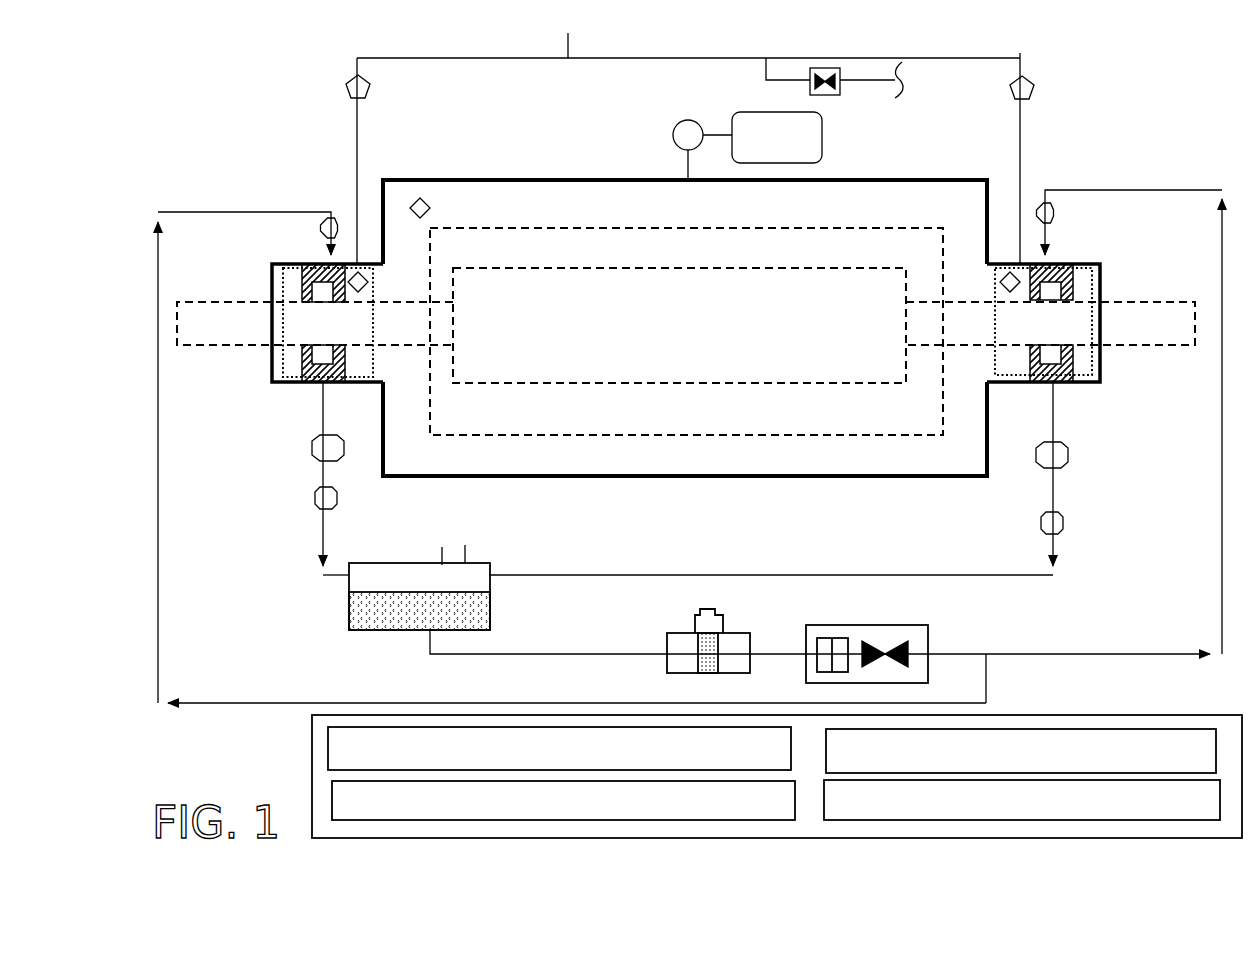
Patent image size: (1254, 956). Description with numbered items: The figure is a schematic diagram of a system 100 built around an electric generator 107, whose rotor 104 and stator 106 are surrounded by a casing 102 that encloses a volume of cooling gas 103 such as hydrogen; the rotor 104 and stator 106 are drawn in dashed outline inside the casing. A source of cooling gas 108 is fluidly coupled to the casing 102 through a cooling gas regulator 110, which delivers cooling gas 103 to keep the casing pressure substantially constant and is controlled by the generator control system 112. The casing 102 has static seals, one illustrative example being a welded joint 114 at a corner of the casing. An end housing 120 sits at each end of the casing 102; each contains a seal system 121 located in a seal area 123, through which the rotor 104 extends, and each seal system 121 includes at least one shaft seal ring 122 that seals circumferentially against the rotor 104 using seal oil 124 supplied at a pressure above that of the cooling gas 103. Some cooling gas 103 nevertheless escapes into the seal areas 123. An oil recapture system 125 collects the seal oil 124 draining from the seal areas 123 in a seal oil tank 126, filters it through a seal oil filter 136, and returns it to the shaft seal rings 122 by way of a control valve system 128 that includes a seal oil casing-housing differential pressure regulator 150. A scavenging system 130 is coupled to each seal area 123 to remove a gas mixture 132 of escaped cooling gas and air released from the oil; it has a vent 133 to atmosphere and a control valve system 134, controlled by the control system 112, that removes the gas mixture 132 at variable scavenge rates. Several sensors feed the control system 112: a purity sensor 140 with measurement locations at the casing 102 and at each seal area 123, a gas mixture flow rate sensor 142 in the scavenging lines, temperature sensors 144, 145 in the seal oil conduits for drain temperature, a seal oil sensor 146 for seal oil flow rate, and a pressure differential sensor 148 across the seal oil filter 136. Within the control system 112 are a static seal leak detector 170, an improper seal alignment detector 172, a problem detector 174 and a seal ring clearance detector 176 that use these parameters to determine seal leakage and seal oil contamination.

The system 100 is at (282, 146).
The casing 102 is at (583, 178).
The cooling gas 103 is at (643, 204).
The rotor 104 is at (493, 295).
The stator 106 is at (544, 248).
The electric generator 107 is at (992, 150).
The source of cooling gas 108 is at (777, 137).
The cooling gas regulator 110 is at (673, 137).
The generator control system 112 is at (312, 772).
The welded joint 114 is at (388, 470).
The end housing 120 is at (272, 358).
The seal system 121 is at (290, 284).
The shaft seal ring 122 is at (298, 265).
The seal area 123 is at (272, 383).
The seal oil 124 is at (182, 213).
The oil recapture system 125 is at (338, 595).
The seal oil tank 126 is at (412, 563).
The control valve system 128 is at (930, 640).
The scavenging system 130 is at (645, 66).
The gas mixture 132 is at (503, 62).
The vent 133 is at (571, 42).
The control valve system 134 is at (833, 93).
The seal oil filter 136 is at (670, 660).
The purity sensor 140 is at (420, 198).
The gas mixture flow rate sensor 142 is at (370, 84).
The temperature sensor 144 is at (318, 500).
The temperature sensor 145 is at (334, 212).
The seal oil sensor 146 is at (322, 450).
The pressure differential sensor 148 is at (695, 615).
The seal oil casing-housing differential pressure regulator 150 is at (827, 640).
The static seal leak detector 170 is at (559, 748).
The improper seal alignment detector 172 is at (563, 800).
The problem detector 174 is at (1021, 751).
The seal ring clearance detector 176 is at (1022, 800).